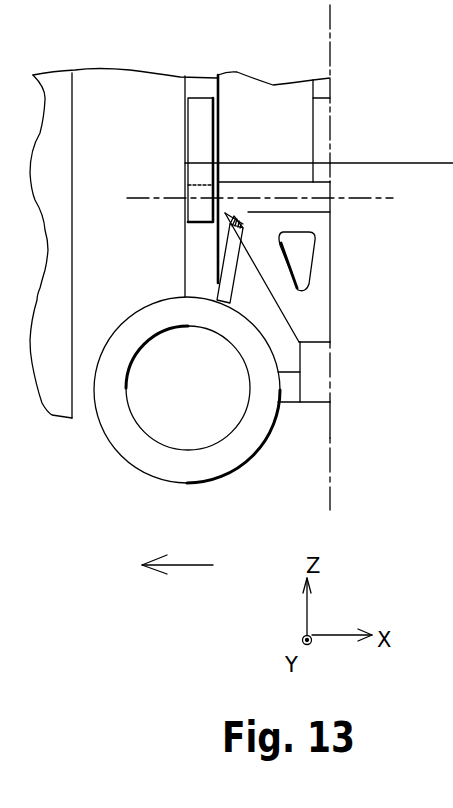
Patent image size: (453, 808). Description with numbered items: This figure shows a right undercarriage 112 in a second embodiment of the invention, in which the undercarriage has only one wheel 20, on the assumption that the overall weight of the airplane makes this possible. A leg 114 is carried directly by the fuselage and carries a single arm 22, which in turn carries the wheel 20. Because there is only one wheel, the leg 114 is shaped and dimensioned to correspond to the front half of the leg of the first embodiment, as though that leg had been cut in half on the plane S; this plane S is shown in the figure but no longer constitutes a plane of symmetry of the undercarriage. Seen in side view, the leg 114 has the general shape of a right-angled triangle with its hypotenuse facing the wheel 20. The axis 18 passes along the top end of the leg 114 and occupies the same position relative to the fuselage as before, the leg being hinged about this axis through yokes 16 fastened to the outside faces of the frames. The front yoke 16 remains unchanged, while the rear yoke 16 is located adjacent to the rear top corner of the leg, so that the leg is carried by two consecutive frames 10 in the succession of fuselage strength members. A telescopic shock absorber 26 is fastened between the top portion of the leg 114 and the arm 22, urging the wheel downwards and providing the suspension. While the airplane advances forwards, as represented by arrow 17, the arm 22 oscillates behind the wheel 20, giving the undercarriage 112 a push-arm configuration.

The strength member 10 is at (202, 83).
The yoke 16 is at (200, 117).
The leg 114 is at (277, 190).
The axis 18 is at (363, 200).
The shock absorber 26 is at (221, 286).
The wheel 20 is at (192, 458).
The arm 22 is at (289, 403).
The right undercarriage 112 is at (124, 457).
The arrow 17 is at (177, 567).
The plane S is at (332, 28).